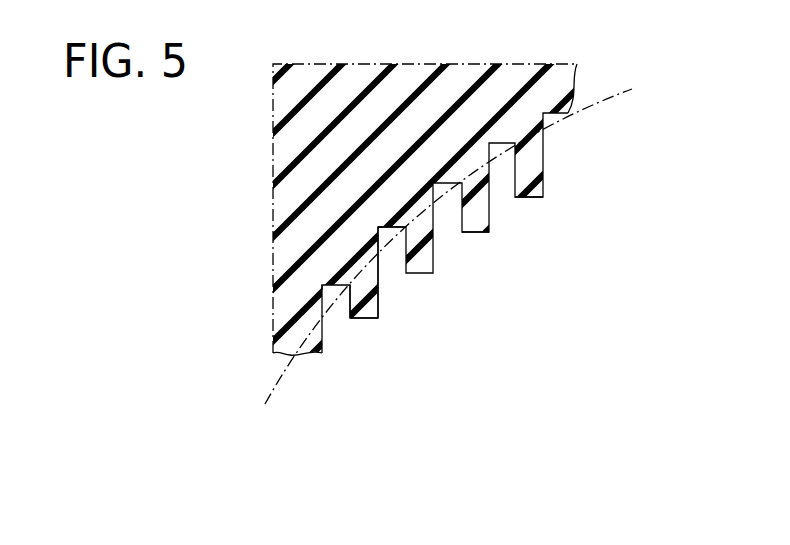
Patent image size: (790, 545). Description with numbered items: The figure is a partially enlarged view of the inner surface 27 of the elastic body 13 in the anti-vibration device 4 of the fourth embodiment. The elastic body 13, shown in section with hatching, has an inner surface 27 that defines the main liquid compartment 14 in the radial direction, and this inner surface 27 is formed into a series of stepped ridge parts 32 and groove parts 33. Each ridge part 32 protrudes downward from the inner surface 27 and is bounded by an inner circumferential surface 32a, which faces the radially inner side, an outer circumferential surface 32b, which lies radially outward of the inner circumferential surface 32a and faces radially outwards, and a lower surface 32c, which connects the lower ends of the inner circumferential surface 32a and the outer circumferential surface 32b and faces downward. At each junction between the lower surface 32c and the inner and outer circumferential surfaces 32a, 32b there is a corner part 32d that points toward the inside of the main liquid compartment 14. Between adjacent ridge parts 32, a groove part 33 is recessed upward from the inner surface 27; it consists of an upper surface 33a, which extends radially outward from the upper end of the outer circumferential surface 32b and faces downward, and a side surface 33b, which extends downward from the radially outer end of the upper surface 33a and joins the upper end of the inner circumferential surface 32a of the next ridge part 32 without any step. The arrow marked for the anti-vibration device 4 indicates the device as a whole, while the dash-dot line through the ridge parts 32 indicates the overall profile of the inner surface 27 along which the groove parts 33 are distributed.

The elastic body 13 is at (354, 82).
The anti-vibration device 4 is at (573, 150).
The ridge part 32 is at (541, 203).
The inner circumferential surface 32a is at (380, 295).
The outer circumferential surface 32b is at (347, 285).
The lower surface 32c is at (362, 320).
The corner part 32d is at (538, 192).
The groove part 33 is at (494, 147).
The upper surface 33a is at (380, 230).
The side surface 33b is at (323, 296).
The inner surface 27 is at (401, 231).
The main liquid compartment 14 is at (607, 384).